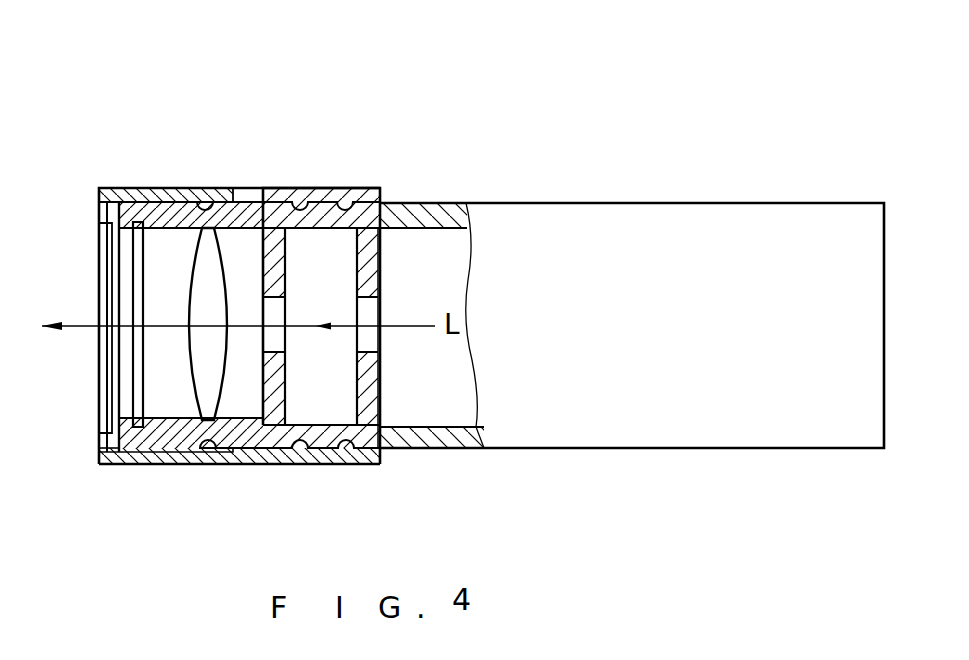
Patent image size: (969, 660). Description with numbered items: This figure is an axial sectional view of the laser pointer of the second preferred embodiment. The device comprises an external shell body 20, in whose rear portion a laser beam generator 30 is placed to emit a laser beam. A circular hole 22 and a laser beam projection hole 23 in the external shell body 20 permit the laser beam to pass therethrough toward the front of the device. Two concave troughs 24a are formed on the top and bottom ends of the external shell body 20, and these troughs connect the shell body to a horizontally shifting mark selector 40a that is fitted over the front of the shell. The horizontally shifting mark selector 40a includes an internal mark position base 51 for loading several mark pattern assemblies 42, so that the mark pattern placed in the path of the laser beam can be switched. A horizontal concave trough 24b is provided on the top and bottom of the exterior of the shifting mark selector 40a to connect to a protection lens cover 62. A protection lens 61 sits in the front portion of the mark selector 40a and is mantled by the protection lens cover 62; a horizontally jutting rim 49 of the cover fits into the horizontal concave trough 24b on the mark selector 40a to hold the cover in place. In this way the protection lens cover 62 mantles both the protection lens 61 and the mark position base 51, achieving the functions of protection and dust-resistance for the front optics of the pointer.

The external shell body 20 is at (375, 228).
The circular hole 22 is at (363, 342).
The laser beam projection hole 23 is at (272, 342).
The concave troughs 24a is at (315, 200).
The horizontal concave trough 24b is at (217, 200).
The laser beam generator 30 is at (735, 245).
The horizontally shifting mark selector 40a is at (257, 104).
The mark pattern assemblies 42 is at (176, 384).
The horizontally jutting rim 49 is at (200, 212).
The mark position base 51 is at (123, 446).
The protection lens 61 is at (112, 290).
The protection lens cover 62 is at (122, 186).